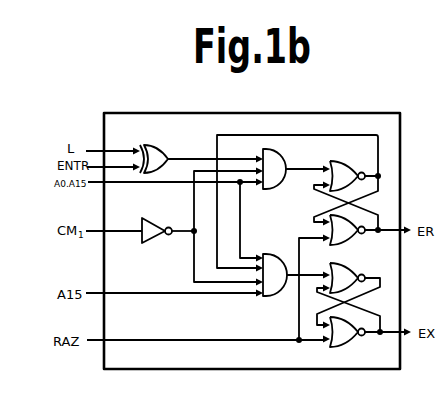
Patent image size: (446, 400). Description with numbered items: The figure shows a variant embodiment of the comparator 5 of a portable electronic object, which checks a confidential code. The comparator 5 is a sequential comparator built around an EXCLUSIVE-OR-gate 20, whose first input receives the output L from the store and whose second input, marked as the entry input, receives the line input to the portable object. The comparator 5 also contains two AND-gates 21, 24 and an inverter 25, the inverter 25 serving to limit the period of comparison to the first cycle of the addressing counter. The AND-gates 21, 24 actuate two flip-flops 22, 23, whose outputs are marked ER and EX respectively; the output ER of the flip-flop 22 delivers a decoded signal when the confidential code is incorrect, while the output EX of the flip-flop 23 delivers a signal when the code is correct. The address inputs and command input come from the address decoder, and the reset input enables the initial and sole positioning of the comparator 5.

The comparator 5 is at (128, 358).
The EXCLUSIVE-OR-gate 20 is at (152, 148).
The AND-gate 21 is at (275, 189).
The flip-flop 22 is at (372, 201).
The flip-flop 23 is at (377, 303).
The AND-gate 24 is at (270, 292).
The inverter 25 is at (153, 238).